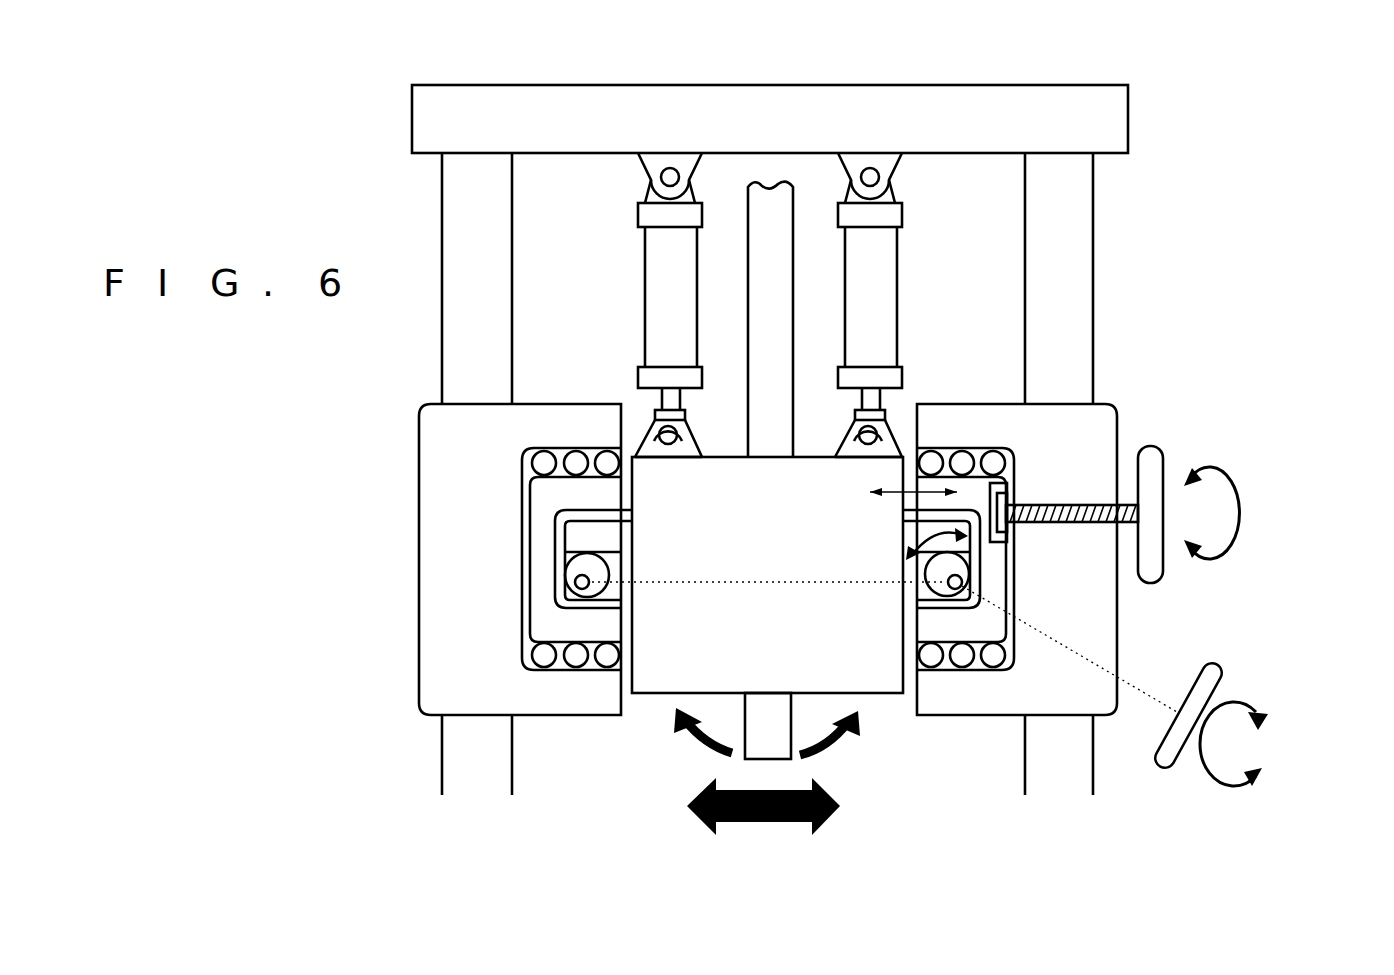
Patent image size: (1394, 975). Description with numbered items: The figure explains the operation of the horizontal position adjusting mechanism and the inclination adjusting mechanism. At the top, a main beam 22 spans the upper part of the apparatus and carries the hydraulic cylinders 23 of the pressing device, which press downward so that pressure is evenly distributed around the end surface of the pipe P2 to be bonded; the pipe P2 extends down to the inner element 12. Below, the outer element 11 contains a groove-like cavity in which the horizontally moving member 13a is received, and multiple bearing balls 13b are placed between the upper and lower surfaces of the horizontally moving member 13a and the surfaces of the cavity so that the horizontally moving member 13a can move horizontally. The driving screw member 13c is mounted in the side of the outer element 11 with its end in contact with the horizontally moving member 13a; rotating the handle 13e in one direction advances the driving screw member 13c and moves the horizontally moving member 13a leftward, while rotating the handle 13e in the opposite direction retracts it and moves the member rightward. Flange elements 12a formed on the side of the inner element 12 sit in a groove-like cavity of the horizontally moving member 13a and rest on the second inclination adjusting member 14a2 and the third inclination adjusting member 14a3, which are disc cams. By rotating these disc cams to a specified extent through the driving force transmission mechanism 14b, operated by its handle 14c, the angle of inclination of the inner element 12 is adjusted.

The main beam 22 is at (770, 89).
The pipe P2 is at (846, 251).
The hydraulic cylinder 23 is at (733, 305).
The outer element 11 is at (721, 474).
The inner element 12 is at (766, 620).
The flange element 12a is at (650, 541).
The horizontally moving member 13a is at (676, 573).
The bearing ball 13b is at (768, 613).
The driving screw member 13c is at (1120, 505).
The handle 13e is at (1225, 501).
The second inclination adjusting member 14a2 is at (488, 653).
The third inclination adjusting member 14a3 is at (1076, 587).
The driving force transmission mechanism 14b is at (1268, 745).
The handle 14c is at (1183, 760).